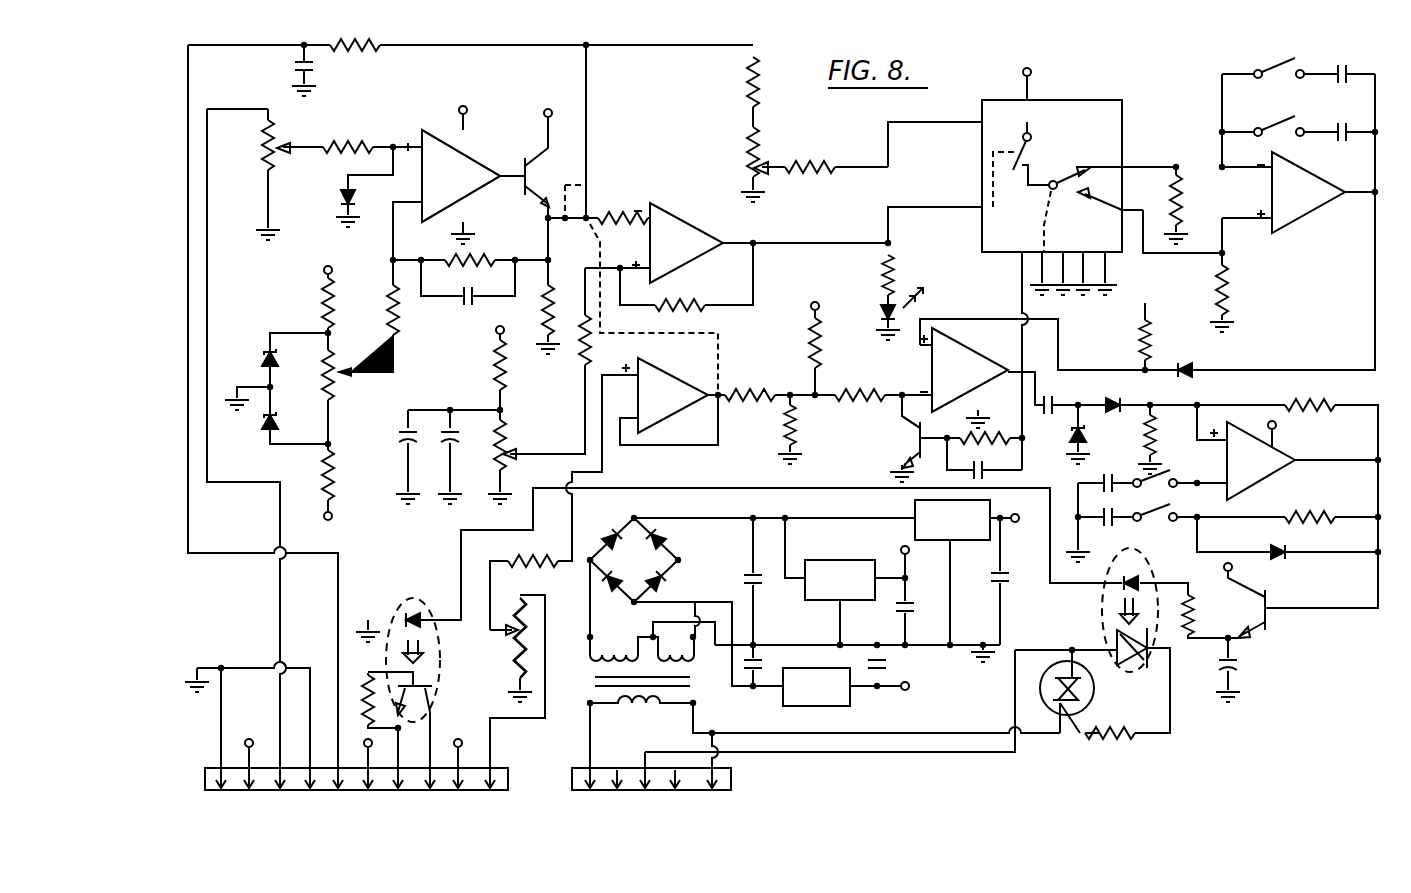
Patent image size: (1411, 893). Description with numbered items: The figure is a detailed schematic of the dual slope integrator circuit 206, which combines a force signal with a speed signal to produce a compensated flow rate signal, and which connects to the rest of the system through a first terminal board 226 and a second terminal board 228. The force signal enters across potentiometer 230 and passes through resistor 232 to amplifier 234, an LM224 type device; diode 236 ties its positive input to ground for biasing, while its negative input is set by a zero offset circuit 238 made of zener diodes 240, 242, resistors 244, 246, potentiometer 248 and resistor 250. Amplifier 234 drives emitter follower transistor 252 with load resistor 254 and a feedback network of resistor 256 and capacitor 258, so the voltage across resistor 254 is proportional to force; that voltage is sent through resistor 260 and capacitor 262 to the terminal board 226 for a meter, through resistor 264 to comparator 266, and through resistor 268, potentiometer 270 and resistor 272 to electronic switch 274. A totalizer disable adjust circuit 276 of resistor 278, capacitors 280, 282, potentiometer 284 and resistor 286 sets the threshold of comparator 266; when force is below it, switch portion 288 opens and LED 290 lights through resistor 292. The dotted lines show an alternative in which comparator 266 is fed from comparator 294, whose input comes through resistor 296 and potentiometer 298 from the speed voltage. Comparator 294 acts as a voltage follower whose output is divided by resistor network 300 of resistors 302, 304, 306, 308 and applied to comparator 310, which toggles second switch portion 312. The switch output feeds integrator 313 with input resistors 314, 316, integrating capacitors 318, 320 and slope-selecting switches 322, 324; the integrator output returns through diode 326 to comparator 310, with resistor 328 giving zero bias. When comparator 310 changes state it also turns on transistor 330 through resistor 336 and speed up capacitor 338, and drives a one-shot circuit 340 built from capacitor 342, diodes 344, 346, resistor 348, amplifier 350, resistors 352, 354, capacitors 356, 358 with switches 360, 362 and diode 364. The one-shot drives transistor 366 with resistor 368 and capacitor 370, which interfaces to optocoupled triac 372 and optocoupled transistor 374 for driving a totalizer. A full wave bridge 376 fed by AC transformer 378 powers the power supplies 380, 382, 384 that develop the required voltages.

The dual slope integrator circuit 206 is at (1152, 82).
The first terminal board 226 is at (508, 768).
The second terminal board 228 is at (731, 778).
The potentiometer 230 is at (272, 150).
The resistor 232 is at (340, 142).
The amplifier 234 is at (482, 148).
The diode 236 is at (340, 200).
The zero offset circuit 238 is at (250, 310).
The zener diode 240 is at (244, 348).
The zener diode 242 is at (248, 432).
The resistor 244 is at (322, 298).
The resistor 246 is at (338, 474).
The potentiometer 248 is at (338, 376).
The resistor 250 is at (392, 296).
The emitter follower transistor 252 is at (542, 184).
The load resistor 254 is at (548, 306).
The resistor 256 is at (470, 259).
The capacitor 258 is at (474, 306).
The resistor 260 is at (349, 50).
The capacitor 262 is at (290, 70).
The resistor 264 is at (612, 210).
The comparator 266 is at (675, 214).
The resistor 268 is at (746, 78).
The potentiometer 270 is at (750, 156).
The resistor 272 is at (806, 160).
The electronic switch 274 is at (1073, 98).
The totalizer disable adjust circuit 276 is at (525, 410).
The resistor 278 is at (494, 376).
The capacitor 280 is at (396, 436).
The capacitor 282 is at (468, 455).
The potentiometer 284 is at (506, 458).
The resistor 286 is at (592, 338).
The switch portion 288 is at (1003, 141).
The LED 290 is at (868, 308).
The resistor 292 is at (912, 268).
The comparator 294 is at (676, 374).
The resistor 296 is at (531, 568).
The potentiometer 298 is at (512, 656).
The resistor network 300 is at (790, 366).
The resistor 302 is at (756, 404).
The resistor 304 is at (824, 352).
The resistor 306 is at (794, 424).
The resistor 308 is at (872, 382).
The comparator 310 is at (982, 364).
The second switch portion 312 is at (1058, 172).
The integrator 313 is at (1293, 224).
The input resistor 314 is at (1180, 193).
The input resistor 316 is at (1232, 286).
The integrating capacitor 318 is at (1337, 64).
The integrating capacitor 320 is at (1343, 140).
The switch 322 is at (1284, 48).
The switch 324 is at (1284, 110).
The diode 326 is at (1193, 362).
The resistor 328 is at (1142, 330).
The transistor 330 is at (918, 432).
The resistor 336 is at (974, 432).
The speed up capacitor 338 is at (984, 478).
The one-shot circuit 340 is at (1342, 628).
The capacitor 342 is at (1054, 396).
The diode 344 is at (1070, 436).
The diode 346 is at (1119, 396).
The resistor 348 is at (1150, 426).
The amplifier 350 is at (1274, 476).
The resistor 352 is at (1321, 396).
The resistor 354 is at (1321, 508).
The capacitor 356 is at (1112, 474).
The capacitor 358 is at (1098, 534).
The switch 360 is at (1168, 468).
The switch 362 is at (1160, 528).
The diode 364 is at (1292, 558).
The transistor 366 is at (1268, 624).
The resistor 368 is at (1188, 610).
The capacitor 370 is at (1240, 666).
The optocoupled triac 372 is at (1098, 602).
The optocoupled transistor 374 is at (418, 600).
The full wave bridge 376 is at (668, 572).
The AC transformer 378 is at (570, 670).
The power supply 380 is at (914, 503).
The power supply 382 is at (840, 553).
The power supply 384 is at (840, 710).